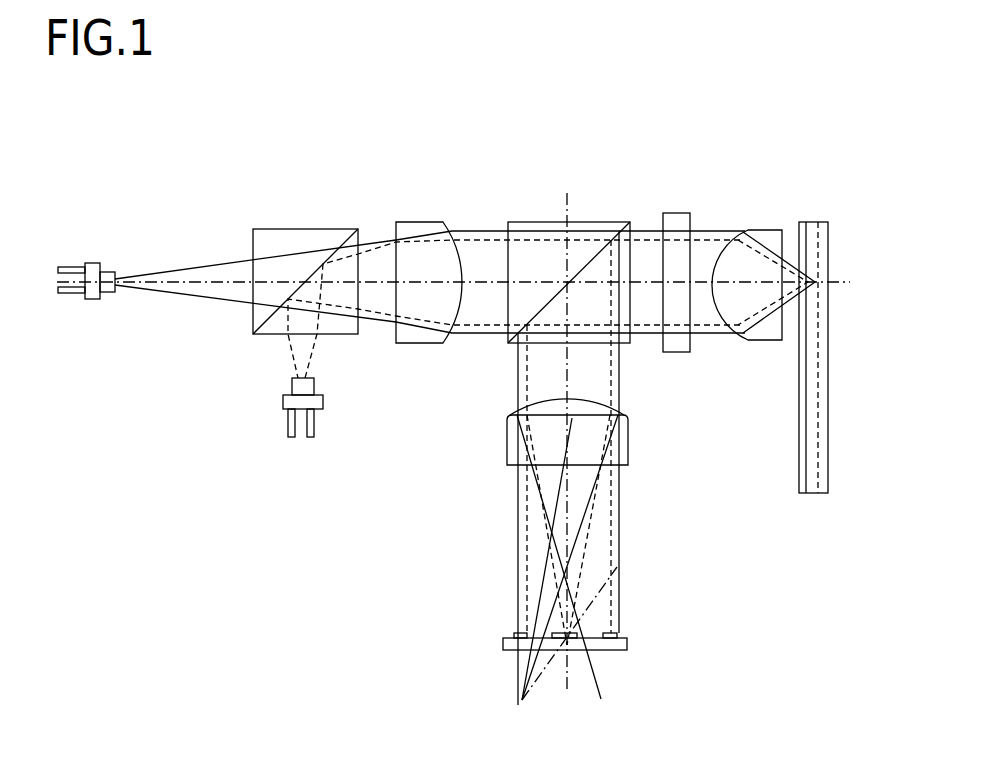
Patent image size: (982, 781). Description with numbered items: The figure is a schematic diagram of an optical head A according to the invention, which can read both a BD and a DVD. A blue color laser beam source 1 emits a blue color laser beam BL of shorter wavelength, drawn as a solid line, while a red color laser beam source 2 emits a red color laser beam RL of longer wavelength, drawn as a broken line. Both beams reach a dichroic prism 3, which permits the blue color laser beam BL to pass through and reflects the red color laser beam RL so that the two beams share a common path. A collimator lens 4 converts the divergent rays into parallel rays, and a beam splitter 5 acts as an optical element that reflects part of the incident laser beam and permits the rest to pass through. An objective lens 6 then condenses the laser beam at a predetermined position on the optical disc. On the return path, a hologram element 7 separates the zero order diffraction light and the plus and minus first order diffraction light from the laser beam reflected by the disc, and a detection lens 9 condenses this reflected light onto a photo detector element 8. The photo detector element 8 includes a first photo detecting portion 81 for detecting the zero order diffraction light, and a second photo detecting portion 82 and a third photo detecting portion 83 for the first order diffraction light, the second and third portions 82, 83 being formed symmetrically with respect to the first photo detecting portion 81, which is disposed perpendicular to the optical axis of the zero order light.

The blue color laser beam source 1 is at (95, 298).
The red color laser beam source 2 is at (283, 398).
The dichroic prism 3 is at (293, 235).
The collimator lens 4 is at (418, 230).
The beam splitter 5 is at (533, 225).
The objective lens 6 is at (773, 232).
The hologram element 7 is at (682, 342).
The photo detector element 8 is at (510, 647).
The detection lens 9 is at (517, 445).
The first photo detecting portion 81 is at (588, 650).
The second photo detecting portion 82 is at (630, 634).
The third photo detecting portion 83 is at (512, 635).
The optical head A is at (182, 166).
The blue color laser beam BL is at (378, 243).
The red color laser beam RL is at (380, 310).